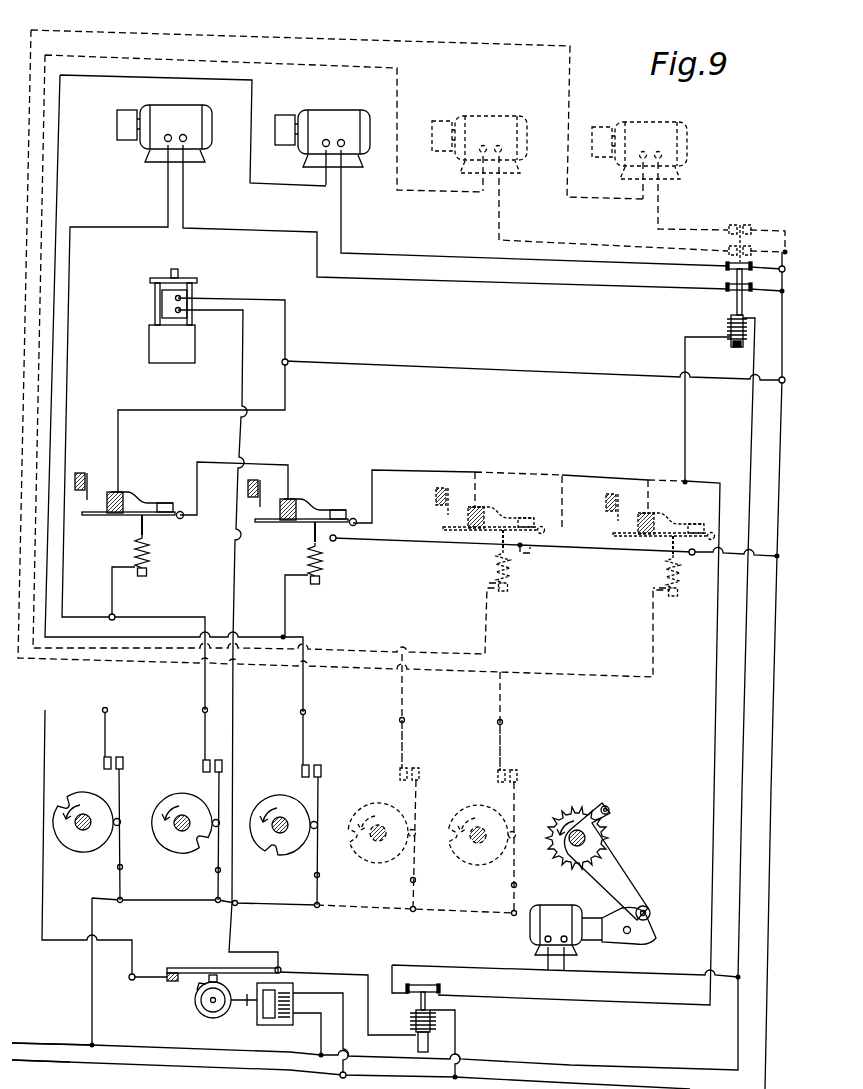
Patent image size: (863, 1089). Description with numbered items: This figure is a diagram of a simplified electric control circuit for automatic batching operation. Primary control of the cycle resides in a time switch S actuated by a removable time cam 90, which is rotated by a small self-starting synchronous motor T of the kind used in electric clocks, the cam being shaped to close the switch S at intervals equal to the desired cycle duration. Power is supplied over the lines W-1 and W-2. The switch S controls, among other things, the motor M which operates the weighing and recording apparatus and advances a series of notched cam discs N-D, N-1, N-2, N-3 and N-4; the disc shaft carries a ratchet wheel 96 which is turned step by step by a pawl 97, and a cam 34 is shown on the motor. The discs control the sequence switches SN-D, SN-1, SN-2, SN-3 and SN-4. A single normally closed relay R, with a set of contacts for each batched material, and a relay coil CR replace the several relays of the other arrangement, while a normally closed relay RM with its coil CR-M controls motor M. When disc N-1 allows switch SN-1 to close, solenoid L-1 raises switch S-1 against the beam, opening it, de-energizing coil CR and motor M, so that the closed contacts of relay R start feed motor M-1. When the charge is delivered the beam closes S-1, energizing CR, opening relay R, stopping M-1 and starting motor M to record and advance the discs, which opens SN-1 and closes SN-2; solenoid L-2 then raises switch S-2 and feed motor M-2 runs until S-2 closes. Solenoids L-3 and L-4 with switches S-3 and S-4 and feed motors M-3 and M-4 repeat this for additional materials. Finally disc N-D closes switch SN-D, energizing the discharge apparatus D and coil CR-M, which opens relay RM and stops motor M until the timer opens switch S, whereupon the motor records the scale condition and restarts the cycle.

The feed motor M-1 is at (183, 110).
The feed motor M-2 is at (322, 117).
The feed motor M-3 is at (500, 125).
The feed motor M-4 is at (668, 131).
The normally closed relay R is at (729, 229).
The relay coil CR is at (728, 331).
The discharge apparatus D is at (173, 316).
The solenoid switch S-1 is at (121, 494).
The solenoid switch S-2 is at (294, 500).
The solenoid switch S-3 is at (482, 510).
The solenoid switch S-4 is at (650, 519).
The solenoid L-1 is at (150, 556).
The solenoid L-2 is at (326, 566).
The solenoid L-3 is at (515, 573).
The solenoid L-4 is at (684, 584).
The switch SN-D is at (123, 761).
The switch SN-1 is at (222, 762).
The switch SN-2 is at (319, 765).
The switch SN-3 is at (418, 768).
The switch SN-4 is at (517, 770).
The notched disc N-D is at (83, 852).
The notched disc N-1 is at (178, 853).
The notched disc N-2 is at (275, 856).
The notched disc N-3 is at (375, 863).
The notched disc N-4 is at (475, 866).
The ratchet wheel 96 is at (571, 808).
The pawl 97 is at (599, 803).
The motor M is at (561, 906).
The cam 34 is at (651, 945).
The time switch S is at (160, 969).
The time cam 90 is at (205, 1005).
The synchronous motor T is at (258, 1024).
The normally closed relay RM is at (439, 995).
The relay coil CR-M is at (412, 1021).
The supply line W-1 is at (56, 1042).
The supply line W-2 is at (70, 1064).